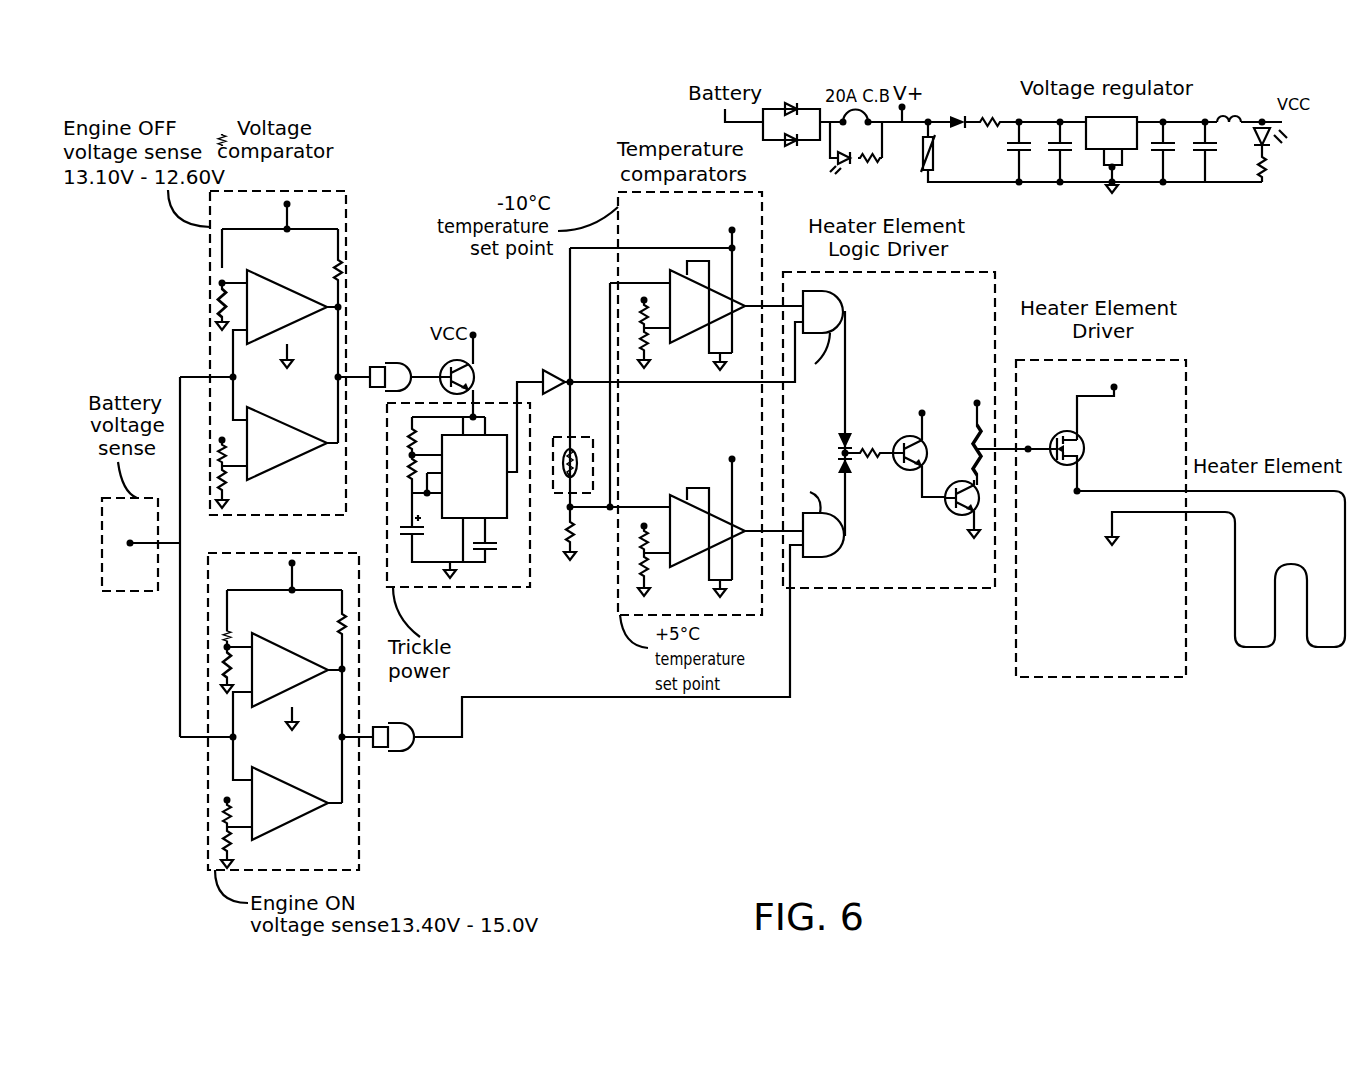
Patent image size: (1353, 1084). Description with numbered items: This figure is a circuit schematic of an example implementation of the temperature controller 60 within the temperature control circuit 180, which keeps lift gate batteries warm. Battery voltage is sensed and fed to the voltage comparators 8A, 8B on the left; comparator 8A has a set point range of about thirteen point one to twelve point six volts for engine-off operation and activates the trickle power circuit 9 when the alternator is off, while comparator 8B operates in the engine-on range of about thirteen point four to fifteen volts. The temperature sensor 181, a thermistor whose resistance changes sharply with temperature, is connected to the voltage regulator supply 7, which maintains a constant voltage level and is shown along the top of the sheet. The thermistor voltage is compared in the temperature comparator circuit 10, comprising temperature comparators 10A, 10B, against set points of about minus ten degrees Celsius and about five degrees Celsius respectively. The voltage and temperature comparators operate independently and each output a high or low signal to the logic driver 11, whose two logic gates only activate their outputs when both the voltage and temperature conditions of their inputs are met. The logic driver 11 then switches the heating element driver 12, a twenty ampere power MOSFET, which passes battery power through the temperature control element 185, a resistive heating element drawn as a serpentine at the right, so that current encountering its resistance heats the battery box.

The temperature controller 60 is at (502, 130).
The voltage regulator supply 7 is at (1160, 198).
The voltage comparator 8A is at (346, 228).
The voltage comparator 8B is at (359, 780).
The trickle power circuit 9 is at (460, 587).
The temperature comparator circuit 10 is at (686, 434).
The temperature comparator 10A is at (676, 246).
The temperature comparator 10B is at (678, 470).
The logic driver 11 is at (890, 588).
The heating element driver 12 is at (1093, 677).
The temperature control circuit 180 is at (1056, 846).
The temperature sensor 181 is at (555, 493).
The temperature control element 185 is at (1255, 655).